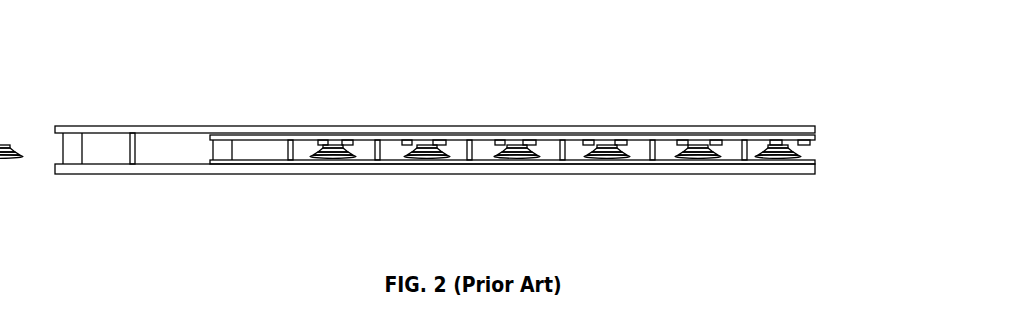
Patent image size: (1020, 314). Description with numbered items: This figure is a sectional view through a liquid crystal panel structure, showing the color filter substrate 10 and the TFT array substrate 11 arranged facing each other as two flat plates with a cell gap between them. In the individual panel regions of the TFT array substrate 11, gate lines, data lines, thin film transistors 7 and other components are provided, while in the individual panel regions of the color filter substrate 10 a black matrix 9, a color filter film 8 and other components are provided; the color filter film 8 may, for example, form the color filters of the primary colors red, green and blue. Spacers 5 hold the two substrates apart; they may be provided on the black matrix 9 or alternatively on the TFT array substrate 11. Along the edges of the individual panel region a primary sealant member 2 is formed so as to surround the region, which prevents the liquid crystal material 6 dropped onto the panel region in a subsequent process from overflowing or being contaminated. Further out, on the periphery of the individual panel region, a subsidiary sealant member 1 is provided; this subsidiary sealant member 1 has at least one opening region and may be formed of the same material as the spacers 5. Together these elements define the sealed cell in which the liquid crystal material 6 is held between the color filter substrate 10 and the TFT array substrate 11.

The subsidiary sealant member 1 is at (74, 147).
The primary sealant member 2 is at (227, 147).
The spacers 5 is at (133, 152).
The liquid crystal material 6 is at (427, 145).
The thin film transistors 7 is at (735, 163).
The color filter film 8 is at (607, 142).
The black matrix 9 is at (712, 142).
The color filter substrate 10 is at (368, 138).
The TFT array substrate 11 is at (535, 170).